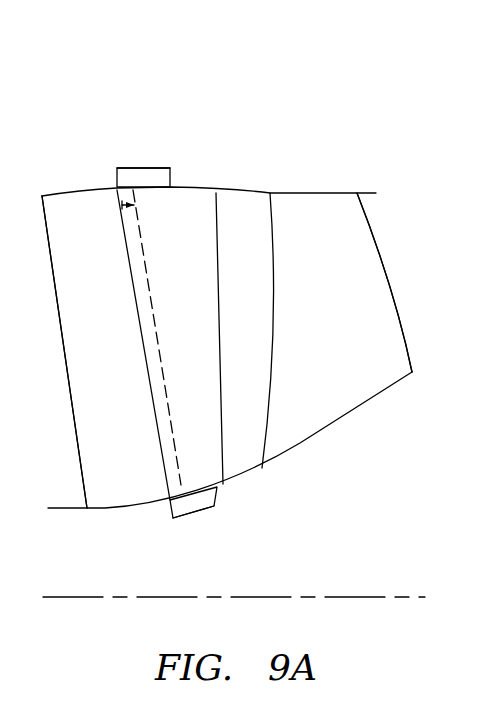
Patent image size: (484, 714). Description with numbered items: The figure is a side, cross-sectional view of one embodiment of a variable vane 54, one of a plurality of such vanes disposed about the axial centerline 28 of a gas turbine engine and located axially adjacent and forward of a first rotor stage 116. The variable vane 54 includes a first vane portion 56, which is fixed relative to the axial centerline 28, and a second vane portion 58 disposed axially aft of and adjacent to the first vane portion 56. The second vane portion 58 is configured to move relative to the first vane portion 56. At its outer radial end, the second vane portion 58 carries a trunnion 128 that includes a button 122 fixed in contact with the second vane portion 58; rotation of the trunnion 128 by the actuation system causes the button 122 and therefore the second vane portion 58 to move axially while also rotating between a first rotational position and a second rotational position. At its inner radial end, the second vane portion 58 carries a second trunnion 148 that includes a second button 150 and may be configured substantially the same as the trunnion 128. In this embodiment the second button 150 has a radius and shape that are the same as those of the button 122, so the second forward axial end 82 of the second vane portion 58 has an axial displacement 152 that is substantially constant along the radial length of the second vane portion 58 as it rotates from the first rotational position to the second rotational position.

The variable vane 54 is at (137, 135).
The first vane portion 56 is at (63, 187).
The second vane portion 58 is at (195, 182).
The first rotor stage 116 is at (370, 351).
The second forward axial end 82 is at (136, 298).
The button 122 is at (117, 183).
The trunnion 128 is at (150, 160).
The axial displacement 152 is at (123, 210).
The second trunnion 148 is at (188, 526).
The second button 150 is at (206, 510).
The axial centerline 28 is at (418, 597).